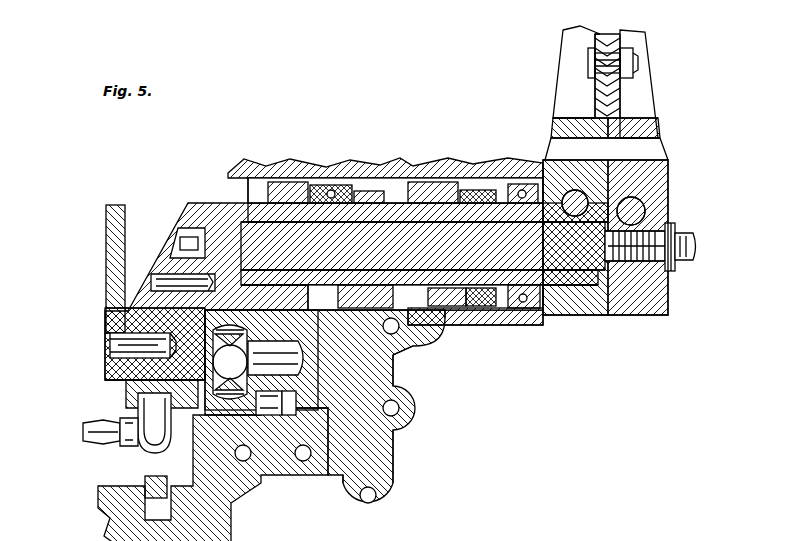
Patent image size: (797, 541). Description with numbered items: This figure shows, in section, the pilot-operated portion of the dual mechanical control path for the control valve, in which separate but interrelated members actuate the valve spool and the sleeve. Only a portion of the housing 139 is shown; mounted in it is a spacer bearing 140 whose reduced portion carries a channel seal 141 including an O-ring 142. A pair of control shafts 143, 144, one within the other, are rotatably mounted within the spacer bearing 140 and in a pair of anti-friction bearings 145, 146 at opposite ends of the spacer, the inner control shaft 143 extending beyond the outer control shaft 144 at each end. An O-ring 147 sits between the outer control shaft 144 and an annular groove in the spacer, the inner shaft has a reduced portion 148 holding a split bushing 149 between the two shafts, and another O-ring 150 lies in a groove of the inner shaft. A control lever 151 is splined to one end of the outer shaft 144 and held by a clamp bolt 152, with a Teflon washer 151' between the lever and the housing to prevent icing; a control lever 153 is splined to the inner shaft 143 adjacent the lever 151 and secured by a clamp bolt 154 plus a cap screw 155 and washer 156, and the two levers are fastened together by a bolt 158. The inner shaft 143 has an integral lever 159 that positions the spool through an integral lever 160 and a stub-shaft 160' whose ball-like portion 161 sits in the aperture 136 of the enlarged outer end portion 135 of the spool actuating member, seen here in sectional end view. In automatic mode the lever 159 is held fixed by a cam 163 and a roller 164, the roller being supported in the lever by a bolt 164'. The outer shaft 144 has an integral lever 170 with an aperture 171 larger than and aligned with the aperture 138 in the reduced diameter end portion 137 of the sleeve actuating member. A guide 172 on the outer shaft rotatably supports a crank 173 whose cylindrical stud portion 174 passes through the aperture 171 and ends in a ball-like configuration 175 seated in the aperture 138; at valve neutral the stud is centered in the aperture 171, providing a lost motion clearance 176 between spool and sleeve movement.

The enlarged outer end portion 135 is at (226, 355).
The aperture 136 is at (253, 475).
The reduced diameter end portion 137 is at (236, 350).
The aperture 138 is at (288, 405).
The housing 139 is at (352, 386).
The spacer bearing 140 is at (420, 178).
The channel seal 141 is at (462, 182).
The O-ring 142 is at (487, 293).
The inner control shaft 143 is at (393, 246).
The outer control shaft 144 is at (230, 258).
The anti-friction bearing 145 is at (318, 183).
The anti-friction bearing 146 is at (514, 176).
The O-ring 147 is at (357, 190).
The reduced portion 148 is at (443, 263).
The split bushing 149 is at (243, 208).
The O-ring 150 is at (560, 265).
The control lever 151 is at (576, 72).
The Teflon washer 151' is at (529, 133).
The clamp bolt 152 is at (567, 182).
The control lever 153 is at (640, 99).
The clamp bolt 154 is at (623, 189).
The cap screw 155 is at (691, 241).
The washer 156 is at (667, 212).
The bolt 158 is at (598, 55).
The lever 159 is at (120, 382).
The lever 160 is at (81, 269).
The stub-shaft 160' is at (218, 433).
The ball-like portion 161 is at (178, 350).
The cam 163 is at (138, 468).
The roller 164 is at (107, 432).
The bolt 164' is at (86, 433).
The lever 170 is at (280, 407).
The aperture 171 is at (300, 345).
The guide 172 is at (305, 312).
The crank 173 is at (345, 440).
The cylindrical stud portion 174 is at (375, 432).
The ball-like configuration 175 is at (300, 365).
The lost motion clearance 176 is at (262, 407).